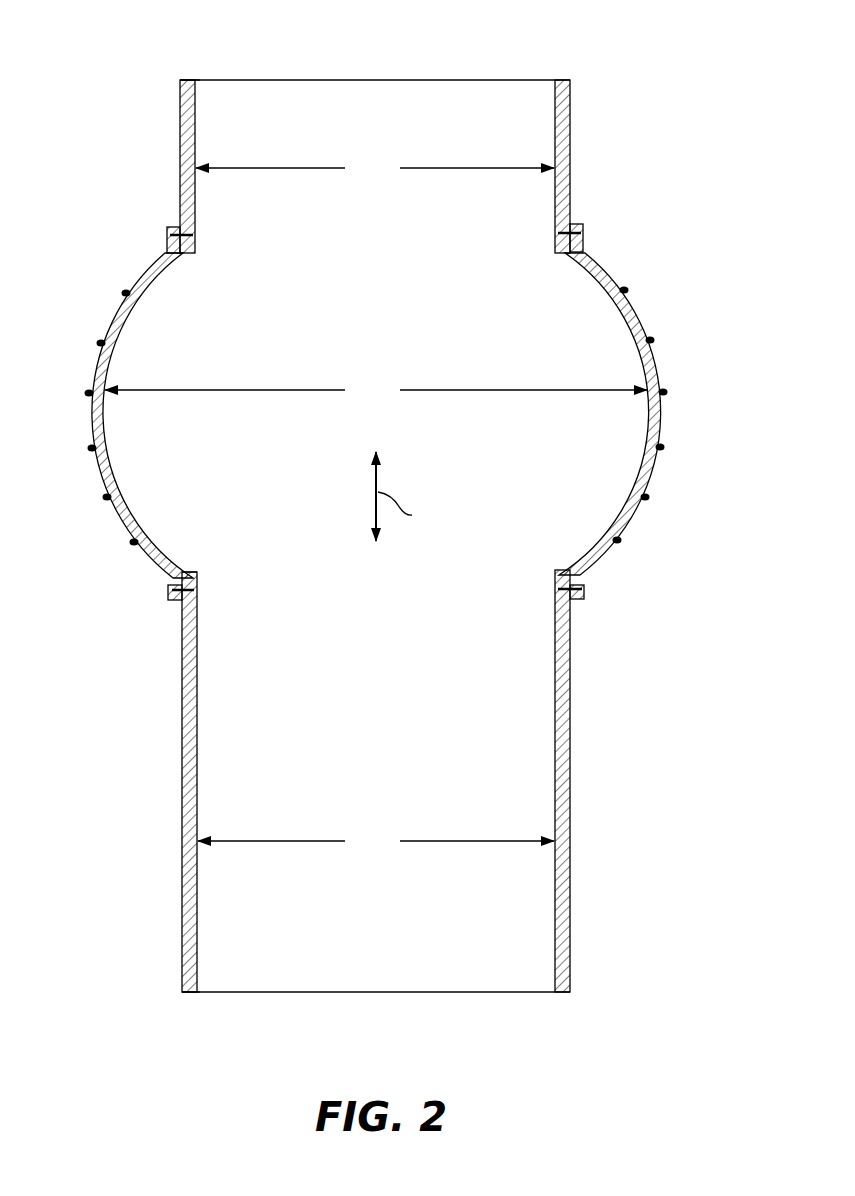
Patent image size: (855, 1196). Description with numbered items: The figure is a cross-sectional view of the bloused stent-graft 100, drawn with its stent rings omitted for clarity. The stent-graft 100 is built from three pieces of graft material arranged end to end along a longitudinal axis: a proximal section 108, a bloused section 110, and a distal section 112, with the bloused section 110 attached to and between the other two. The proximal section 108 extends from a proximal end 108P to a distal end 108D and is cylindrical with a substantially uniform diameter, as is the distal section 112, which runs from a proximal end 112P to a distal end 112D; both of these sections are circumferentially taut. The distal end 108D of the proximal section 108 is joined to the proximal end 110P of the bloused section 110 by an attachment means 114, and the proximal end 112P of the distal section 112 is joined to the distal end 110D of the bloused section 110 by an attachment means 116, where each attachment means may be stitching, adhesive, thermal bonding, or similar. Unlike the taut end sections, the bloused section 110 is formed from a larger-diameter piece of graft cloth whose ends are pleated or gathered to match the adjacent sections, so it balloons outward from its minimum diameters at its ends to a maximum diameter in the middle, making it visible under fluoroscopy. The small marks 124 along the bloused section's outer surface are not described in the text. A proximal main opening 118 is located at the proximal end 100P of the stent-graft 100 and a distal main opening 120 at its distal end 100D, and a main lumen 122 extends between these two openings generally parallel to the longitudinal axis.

The bloused stent-graft 100 is at (135, 1012).
The proximal end 100P is at (428, 66).
The distal end 100D is at (430, 996).
The proximal section 108 is at (181, 142).
The proximal end of proximal section 108P is at (180, 92).
The distal end of proximal section 108D is at (196, 238).
The bloused section 110 is at (97, 418).
The proximal end of bloused section 110P is at (168, 246).
The distal end of bloused section 110D is at (174, 597).
The distal section 112 is at (182, 788).
The proximal end of distal section 112P is at (196, 574).
The distal end of distal section 112D is at (198, 968).
The attachment means 114 is at (563, 226).
The attachment means 116 is at (580, 598).
The proximal main opening 118 is at (366, 122).
The distal main opening 120 is at (434, 969).
The main lumen 122 is at (392, 674).
The protrusions 124 is at (655, 372).